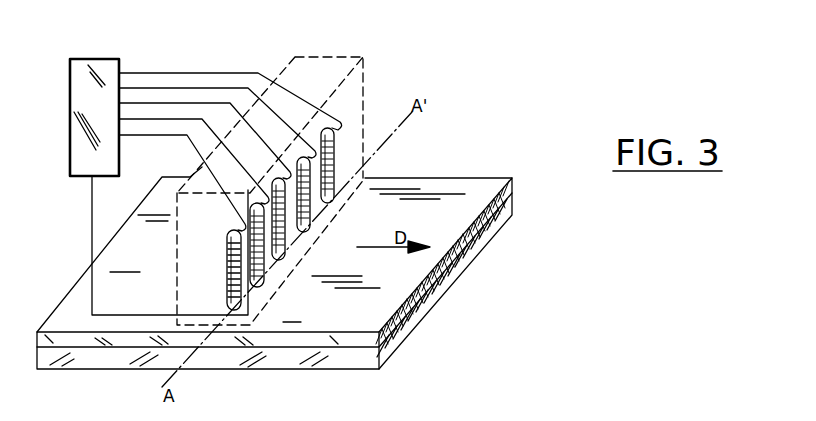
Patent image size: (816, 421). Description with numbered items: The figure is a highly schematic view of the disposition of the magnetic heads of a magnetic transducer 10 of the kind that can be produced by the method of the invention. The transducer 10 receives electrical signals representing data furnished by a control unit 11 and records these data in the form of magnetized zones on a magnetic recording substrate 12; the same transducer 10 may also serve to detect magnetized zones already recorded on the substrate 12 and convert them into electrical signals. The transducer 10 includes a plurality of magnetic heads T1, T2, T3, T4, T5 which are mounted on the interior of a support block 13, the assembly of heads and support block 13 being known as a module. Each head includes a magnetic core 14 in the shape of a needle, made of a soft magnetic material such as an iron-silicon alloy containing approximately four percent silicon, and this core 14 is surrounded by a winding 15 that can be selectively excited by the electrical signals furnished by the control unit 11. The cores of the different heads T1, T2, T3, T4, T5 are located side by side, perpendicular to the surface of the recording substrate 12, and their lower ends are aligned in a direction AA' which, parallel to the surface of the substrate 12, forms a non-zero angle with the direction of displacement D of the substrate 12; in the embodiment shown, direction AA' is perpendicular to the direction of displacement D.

The magnetic transducer 10 is at (374, 92).
The control unit 11 is at (70, 99).
The magnetic recording substrate 12 is at (470, 171).
The support block 13 is at (177, 281).
The magnetic core 14 is at (228, 247).
The winding 15 is at (228, 280).
The magnetic head T1 is at (243, 302).
The magnetic head T2 is at (268, 281).
The magnetic head T3 is at (289, 258).
The magnetic head T4 is at (313, 229).
The magnetic head T5 is at (337, 200).